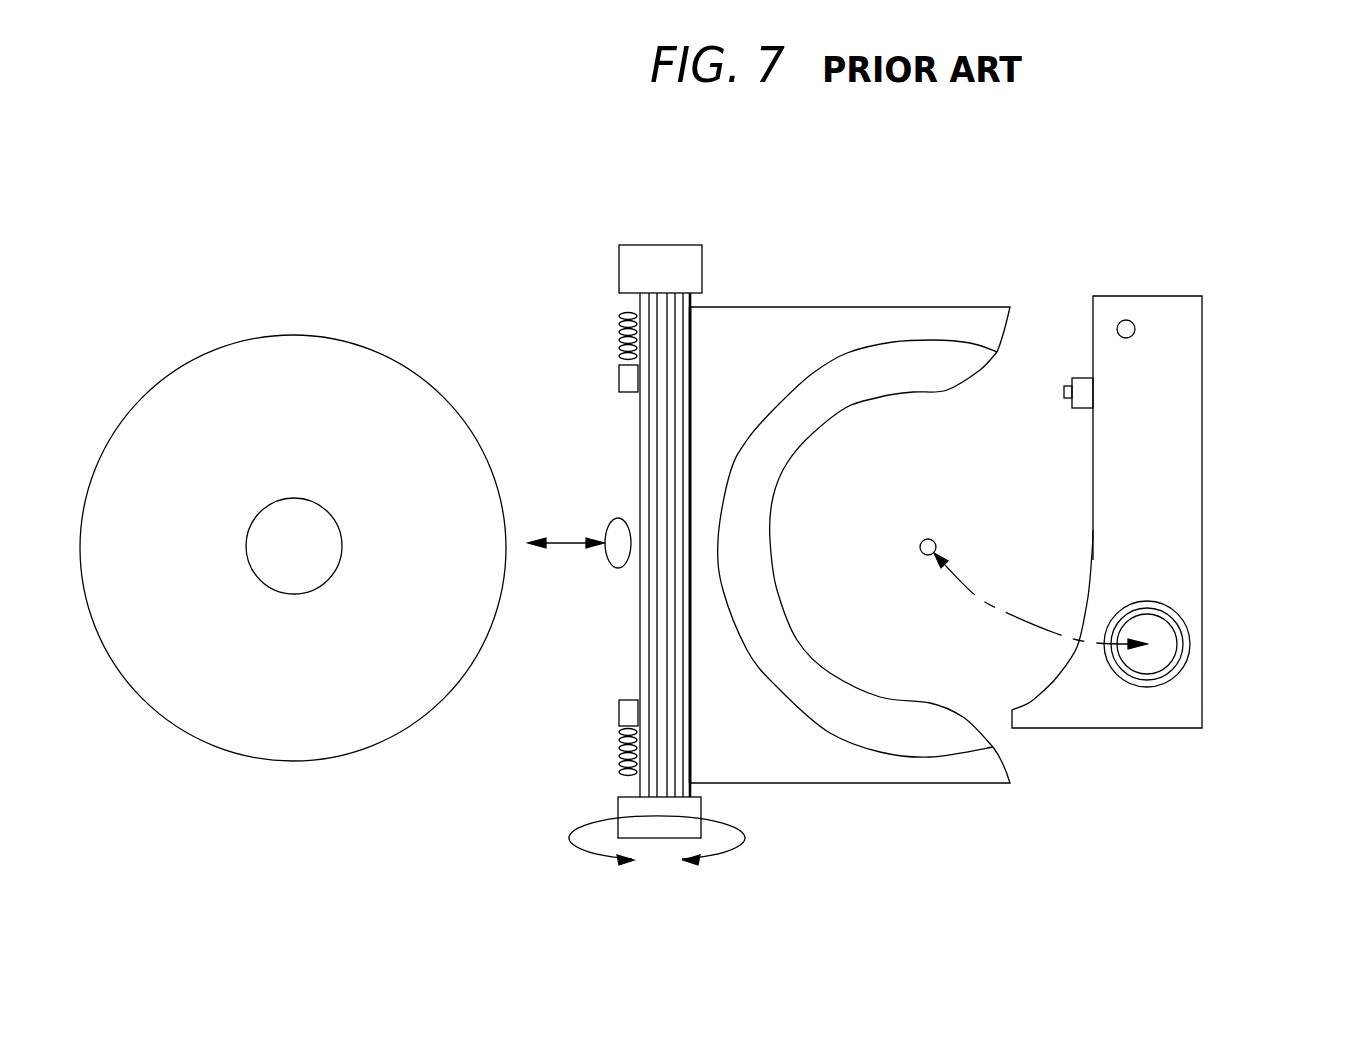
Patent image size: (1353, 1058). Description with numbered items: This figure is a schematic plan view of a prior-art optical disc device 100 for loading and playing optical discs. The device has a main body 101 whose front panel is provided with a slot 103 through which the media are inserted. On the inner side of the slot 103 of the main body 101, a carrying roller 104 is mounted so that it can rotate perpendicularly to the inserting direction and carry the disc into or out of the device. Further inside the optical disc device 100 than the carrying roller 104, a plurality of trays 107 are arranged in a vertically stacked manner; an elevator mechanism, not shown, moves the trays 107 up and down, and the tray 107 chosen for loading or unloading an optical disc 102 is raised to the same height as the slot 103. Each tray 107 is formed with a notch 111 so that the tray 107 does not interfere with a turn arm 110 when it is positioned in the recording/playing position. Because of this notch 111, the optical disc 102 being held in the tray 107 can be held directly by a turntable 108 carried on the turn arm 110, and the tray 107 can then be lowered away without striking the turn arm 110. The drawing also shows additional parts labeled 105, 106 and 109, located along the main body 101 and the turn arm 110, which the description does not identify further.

The optical disc device 100 is at (1030, 250).
The main body 101 is at (590, 312).
The optical disc 102 is at (388, 367).
The slot 103 is at (628, 450).
The carrying roller 104 is at (640, 640).
The upper spring holder 105 is at (618, 380).
The lower spring holder 106 is at (618, 712).
The tray 107 is at (850, 307).
The turntable 108 is at (1167, 648).
The pin hole 109 is at (1127, 320).
The turn arm 110 is at (1228, 442).
The notch 111 is at (921, 522).